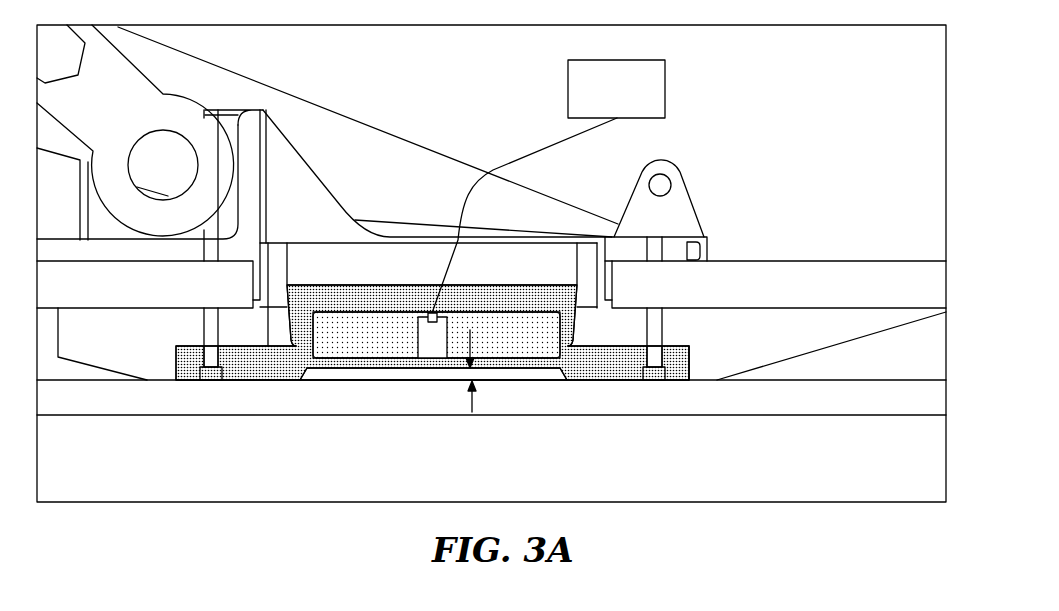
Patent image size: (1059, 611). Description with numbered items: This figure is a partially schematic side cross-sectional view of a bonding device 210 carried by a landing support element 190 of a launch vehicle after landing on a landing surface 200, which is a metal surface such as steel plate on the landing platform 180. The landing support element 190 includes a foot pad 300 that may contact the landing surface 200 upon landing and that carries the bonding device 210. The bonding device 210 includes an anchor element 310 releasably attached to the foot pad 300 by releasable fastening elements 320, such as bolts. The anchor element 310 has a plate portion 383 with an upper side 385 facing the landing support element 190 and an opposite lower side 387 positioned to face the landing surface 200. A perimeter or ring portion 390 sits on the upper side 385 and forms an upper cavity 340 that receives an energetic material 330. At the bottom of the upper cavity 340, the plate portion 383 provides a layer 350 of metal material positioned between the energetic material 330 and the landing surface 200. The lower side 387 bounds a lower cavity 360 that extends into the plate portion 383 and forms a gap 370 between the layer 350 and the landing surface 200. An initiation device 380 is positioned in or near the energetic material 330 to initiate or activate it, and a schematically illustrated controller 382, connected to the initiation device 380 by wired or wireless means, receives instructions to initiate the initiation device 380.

The landing platform 180 is at (902, 478).
The landing support element 190 is at (398, 137).
The landing surface 200 is at (822, 400).
The bonding device 210 is at (631, 389).
The foot pad 300 is at (855, 342).
The anchor element 310 is at (588, 372).
The releasable fastening elements 320 is at (205, 381).
The energetic material 330 is at (390, 348).
The upper cavity 340 is at (342, 308).
The layer of metal material 350 is at (508, 365).
The lower cavity 360 is at (534, 375).
The gap 370 is at (491, 371).
The initiation device 380 is at (435, 343).
The controller 382 is at (665, 90).
The plate portion 383 is at (248, 381).
The upper side 385 is at (228, 343).
The lower side 387 is at (605, 372).
The ring portion 390 is at (295, 296).